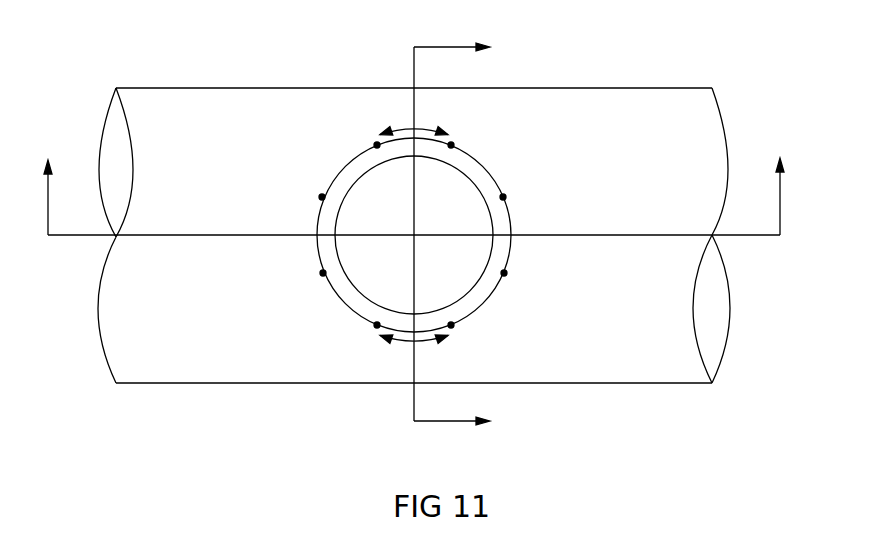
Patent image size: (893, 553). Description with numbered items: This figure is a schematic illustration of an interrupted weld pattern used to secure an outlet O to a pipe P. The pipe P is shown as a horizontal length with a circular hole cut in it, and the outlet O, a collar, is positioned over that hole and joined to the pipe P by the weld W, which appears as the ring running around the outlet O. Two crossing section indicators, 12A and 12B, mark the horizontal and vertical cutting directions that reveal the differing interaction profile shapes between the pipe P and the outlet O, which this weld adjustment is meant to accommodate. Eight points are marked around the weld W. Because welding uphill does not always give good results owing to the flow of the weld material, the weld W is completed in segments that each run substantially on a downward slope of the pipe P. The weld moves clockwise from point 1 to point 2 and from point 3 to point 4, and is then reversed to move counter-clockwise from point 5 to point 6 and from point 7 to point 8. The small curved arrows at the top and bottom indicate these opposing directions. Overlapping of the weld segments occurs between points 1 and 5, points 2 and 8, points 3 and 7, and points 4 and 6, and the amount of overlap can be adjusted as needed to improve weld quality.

The pipe P is at (202, 93).
The outlet O is at (487, 173).
The weld W is at (480, 308).
The section line 12A is at (415, 184).
The section line 12B is at (473, 238).
The point 1 is at (511, 190).
The point 2 is at (372, 337).
The point 3 is at (315, 281).
The point 4 is at (454, 134).
The point 5 is at (512, 281).
The point 6 is at (371, 134).
The point 7 is at (314, 190).
The point 8 is at (456, 337).